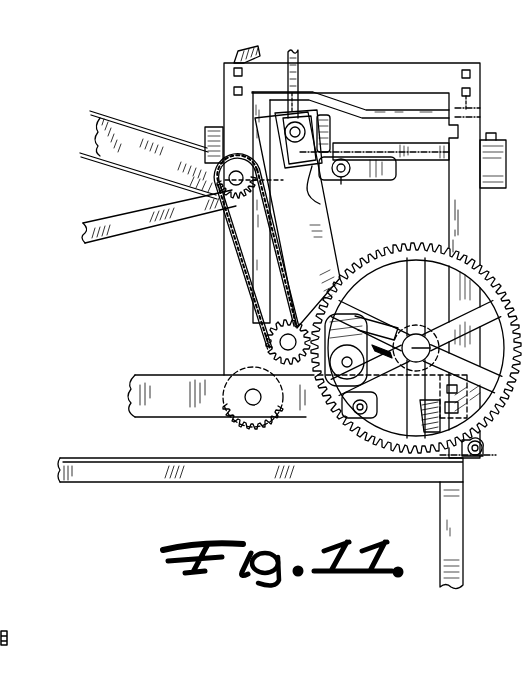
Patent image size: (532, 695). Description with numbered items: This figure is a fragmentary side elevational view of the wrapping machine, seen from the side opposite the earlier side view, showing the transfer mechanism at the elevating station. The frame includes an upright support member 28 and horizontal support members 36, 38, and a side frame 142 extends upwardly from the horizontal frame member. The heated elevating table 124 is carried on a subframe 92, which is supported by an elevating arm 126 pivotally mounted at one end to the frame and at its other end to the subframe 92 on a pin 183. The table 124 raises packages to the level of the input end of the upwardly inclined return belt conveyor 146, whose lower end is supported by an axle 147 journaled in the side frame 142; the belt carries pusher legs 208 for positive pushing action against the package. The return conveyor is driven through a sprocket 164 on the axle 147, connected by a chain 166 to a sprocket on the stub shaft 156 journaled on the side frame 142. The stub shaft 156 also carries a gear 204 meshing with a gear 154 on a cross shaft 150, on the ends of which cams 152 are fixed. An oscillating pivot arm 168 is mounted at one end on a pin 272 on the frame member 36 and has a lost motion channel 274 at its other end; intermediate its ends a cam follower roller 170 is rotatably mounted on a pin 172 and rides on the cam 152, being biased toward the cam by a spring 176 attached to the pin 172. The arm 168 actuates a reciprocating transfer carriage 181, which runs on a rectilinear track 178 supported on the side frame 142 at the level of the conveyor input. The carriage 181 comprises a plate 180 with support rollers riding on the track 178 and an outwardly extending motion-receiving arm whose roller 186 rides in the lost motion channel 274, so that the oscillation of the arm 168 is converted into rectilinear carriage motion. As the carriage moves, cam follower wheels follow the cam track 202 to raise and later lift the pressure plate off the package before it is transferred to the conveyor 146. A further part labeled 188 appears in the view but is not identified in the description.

The upright support member 28 is at (452, 540).
The horizontal support member 36 is at (310, 406).
The horizontal support member 38 is at (314, 472).
The subframe 92 is at (387, 177).
The heated elevating table 124 is at (383, 144).
The elevating arm 126 is at (125, 228).
The side frame 142 is at (460, 257).
The return belt conveyor 146 is at (134, 121).
The axle 147 is at (213, 173).
The cross shaft 150 is at (431, 348).
The cam 152 is at (395, 322).
The gear 154 is at (418, 250).
The stub shaft 156 is at (282, 341).
The sprocket 164 is at (224, 198).
The chain 166 is at (247, 283).
The oscillating pivot arm 168 is at (330, 232).
The cam follower roller 170 is at (386, 349).
The pin 172 is at (353, 363).
The spring 176 is at (437, 425).
The rectilinear track 178 is at (431, 157).
The plate 180 is at (330, 133).
The reciprocating transfer carriage 181 is at (254, 115).
The pin 183 is at (341, 180).
The roller 186 is at (299, 122).
The post 188 is at (297, 58).
The cam track 202 is at (249, 38).
The gear 204 is at (268, 356).
The pusher leg 208 is at (204, 140).
The pin 272 is at (360, 412).
The lost motion channel 274 is at (320, 204).